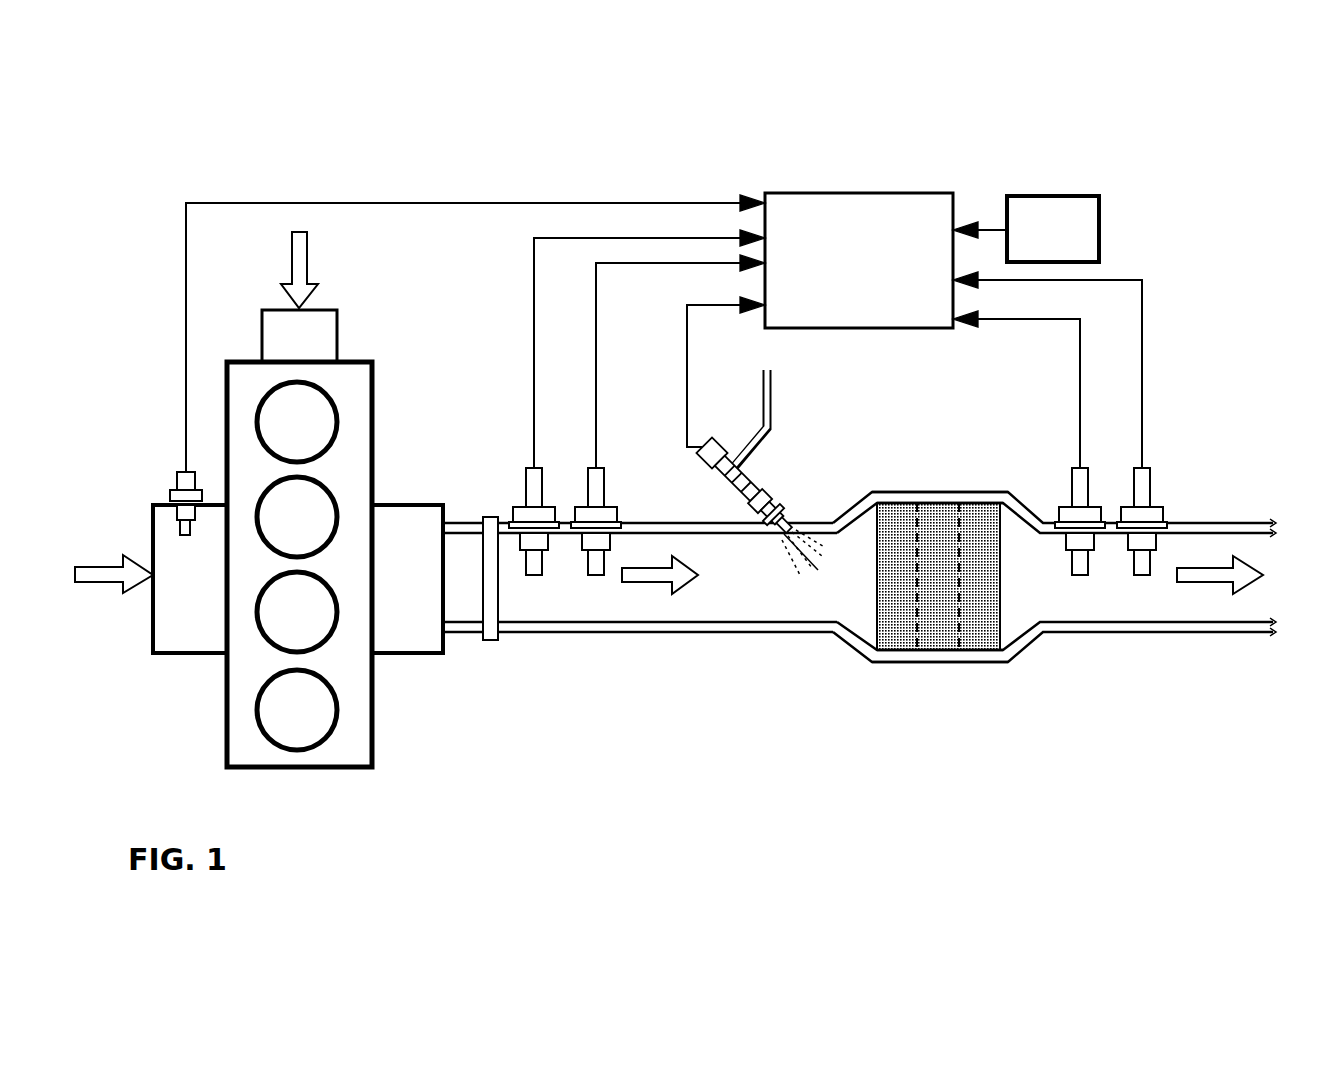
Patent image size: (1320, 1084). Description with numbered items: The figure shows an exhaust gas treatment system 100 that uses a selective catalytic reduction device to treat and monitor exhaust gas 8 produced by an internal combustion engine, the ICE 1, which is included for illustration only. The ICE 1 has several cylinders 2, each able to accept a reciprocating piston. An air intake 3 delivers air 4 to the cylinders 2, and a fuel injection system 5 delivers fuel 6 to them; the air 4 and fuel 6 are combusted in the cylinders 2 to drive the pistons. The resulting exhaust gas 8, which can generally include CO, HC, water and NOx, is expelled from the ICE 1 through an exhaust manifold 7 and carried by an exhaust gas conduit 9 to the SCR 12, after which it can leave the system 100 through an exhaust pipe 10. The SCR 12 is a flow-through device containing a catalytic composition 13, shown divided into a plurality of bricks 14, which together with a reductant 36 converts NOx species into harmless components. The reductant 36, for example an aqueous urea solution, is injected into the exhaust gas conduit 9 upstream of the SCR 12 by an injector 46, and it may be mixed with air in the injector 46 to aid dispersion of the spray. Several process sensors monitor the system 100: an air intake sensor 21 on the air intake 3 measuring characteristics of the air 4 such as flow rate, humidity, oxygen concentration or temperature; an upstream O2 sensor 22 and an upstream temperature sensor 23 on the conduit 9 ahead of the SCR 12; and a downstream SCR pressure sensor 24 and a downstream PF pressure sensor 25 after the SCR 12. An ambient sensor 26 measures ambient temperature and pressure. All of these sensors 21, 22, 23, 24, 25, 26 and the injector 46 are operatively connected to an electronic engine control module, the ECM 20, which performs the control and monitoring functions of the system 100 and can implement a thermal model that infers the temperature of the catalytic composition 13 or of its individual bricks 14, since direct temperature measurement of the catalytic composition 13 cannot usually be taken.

The internal combustion engine 1 is at (211, 735).
The cylinders 2 is at (338, 425).
The air intake 3 is at (153, 530).
The air 4 is at (113, 575).
The fuel injection system 5 is at (262, 330).
The fuel 6 is at (296, 270).
The exhaust manifold 7 is at (402, 655).
The exhaust gas 8 is at (660, 582).
The exhaust gas conduit 9 is at (577, 630).
The exhaust pipe 10 is at (1265, 635).
The SCR 12 is at (894, 480).
The catalytic composition 13 is at (938, 576).
The bricks 14 is at (898, 650).
The electronic engine control module 20 is at (865, 266).
The air intake sensor 21 is at (177, 478).
The upstream SCR O2 sensor 22 is at (526, 485).
The upstream SCR temperature sensor 23 is at (604, 492).
The downstream SCR pressure sensor 24 is at (1072, 485).
The downstream PF pressure sensor 25 is at (1150, 492).
The ambient sensor 26 is at (1037, 244).
The reductant 36 is at (800, 526).
The injector 46 is at (760, 470).
The exhaust gas treatment system 100 is at (1153, 238).